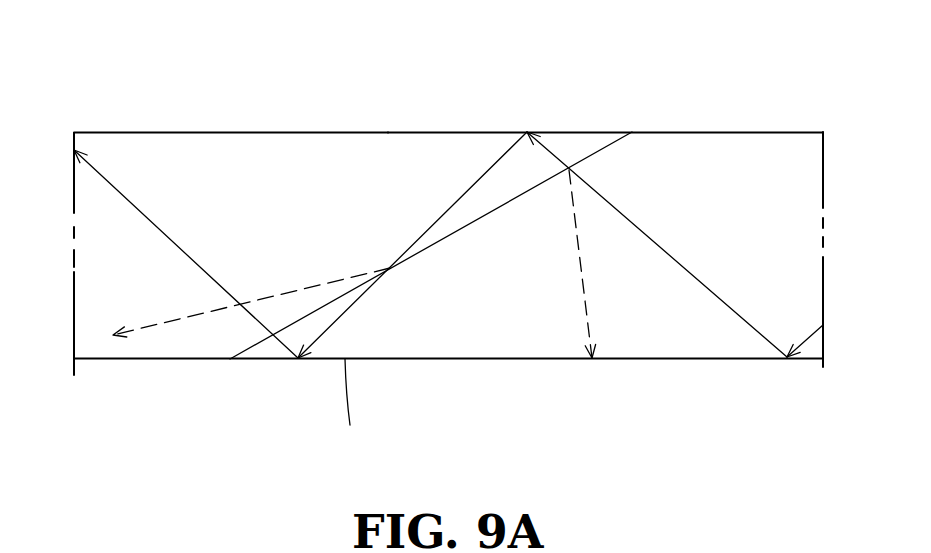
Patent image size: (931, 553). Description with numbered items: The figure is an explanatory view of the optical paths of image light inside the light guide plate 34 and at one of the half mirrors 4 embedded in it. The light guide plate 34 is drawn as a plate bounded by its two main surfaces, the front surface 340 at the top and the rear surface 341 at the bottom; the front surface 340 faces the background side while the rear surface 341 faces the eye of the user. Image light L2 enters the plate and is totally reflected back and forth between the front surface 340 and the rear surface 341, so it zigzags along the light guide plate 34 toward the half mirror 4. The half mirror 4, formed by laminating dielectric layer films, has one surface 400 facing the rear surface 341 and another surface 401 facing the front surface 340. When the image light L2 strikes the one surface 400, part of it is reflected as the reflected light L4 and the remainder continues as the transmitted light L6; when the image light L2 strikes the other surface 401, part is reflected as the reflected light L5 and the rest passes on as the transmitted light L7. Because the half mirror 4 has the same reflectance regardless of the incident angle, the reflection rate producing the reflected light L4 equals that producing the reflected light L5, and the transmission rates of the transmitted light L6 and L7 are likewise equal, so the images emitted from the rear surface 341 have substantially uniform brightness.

The light guide plate 34 is at (762, 132).
The front surface 340 is at (180, 131).
The rear surface 341 is at (158, 359).
The one surface 400 is at (608, 150).
The other surface 401 is at (437, 244).
The half mirror 4 is at (582, 156).
The image light L2 is at (473, 185).
The reflected light L4 is at (587, 328).
The reflected light L5 is at (187, 318).
The transmitted light L6 is at (553, 155).
The transmitted light L7 is at (358, 409).